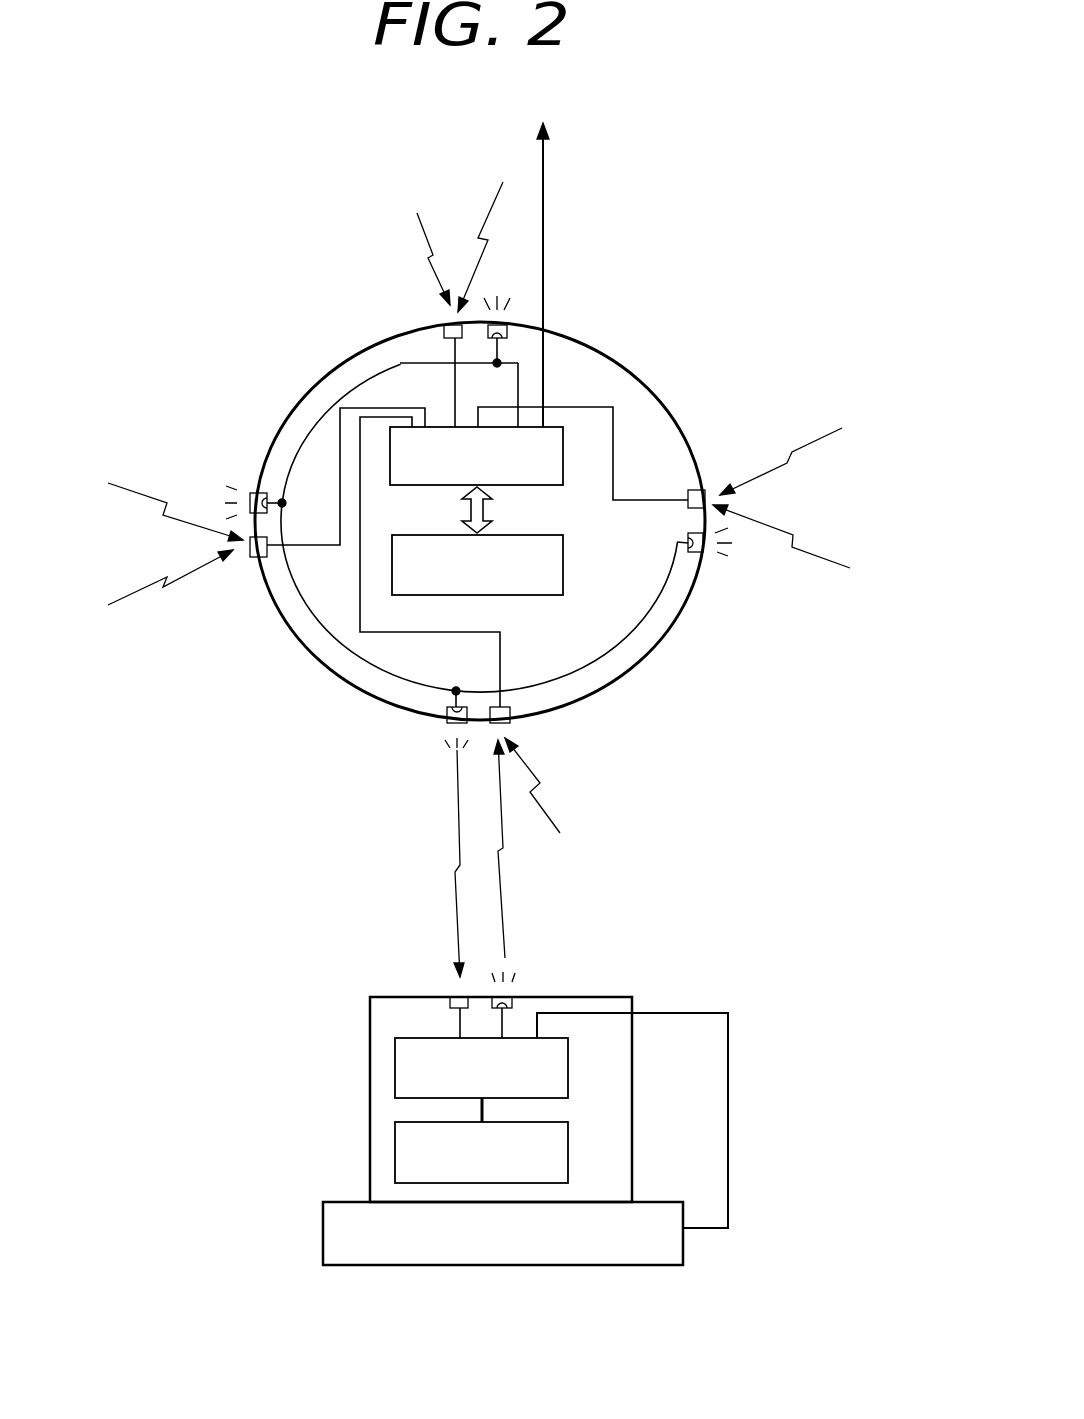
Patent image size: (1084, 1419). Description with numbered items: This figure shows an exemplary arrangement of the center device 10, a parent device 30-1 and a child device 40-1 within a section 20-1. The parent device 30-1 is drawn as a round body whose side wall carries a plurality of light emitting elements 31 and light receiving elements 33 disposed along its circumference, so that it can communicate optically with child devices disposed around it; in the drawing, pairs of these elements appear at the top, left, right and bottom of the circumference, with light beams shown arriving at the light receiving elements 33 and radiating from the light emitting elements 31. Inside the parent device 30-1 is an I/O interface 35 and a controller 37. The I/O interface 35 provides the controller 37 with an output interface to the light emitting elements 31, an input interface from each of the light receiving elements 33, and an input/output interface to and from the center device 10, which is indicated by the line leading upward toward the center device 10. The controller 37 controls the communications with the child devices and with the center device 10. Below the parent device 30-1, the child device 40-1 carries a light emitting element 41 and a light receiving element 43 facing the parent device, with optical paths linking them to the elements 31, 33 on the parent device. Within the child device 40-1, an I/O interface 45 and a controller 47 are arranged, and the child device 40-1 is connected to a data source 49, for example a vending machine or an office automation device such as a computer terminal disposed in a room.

The center device 10 is at (541, 258).
The section 20-1 is at (182, 174).
The parent device 30-1 is at (597, 348).
The light emitting elements 31 is at (506, 324).
The light receiving elements 33 is at (443, 325).
The I/O interface 35 is at (535, 487).
The controller 37 is at (537, 597).
The child device 40-1 is at (604, 997).
The light emitting element of child device 41 is at (512, 997).
The light receiving element of child device 43 is at (450, 997).
The I/O interface of child device 45 is at (568, 1062).
The controller of child device 47 is at (568, 1148).
The data source 49 is at (323, 1224).